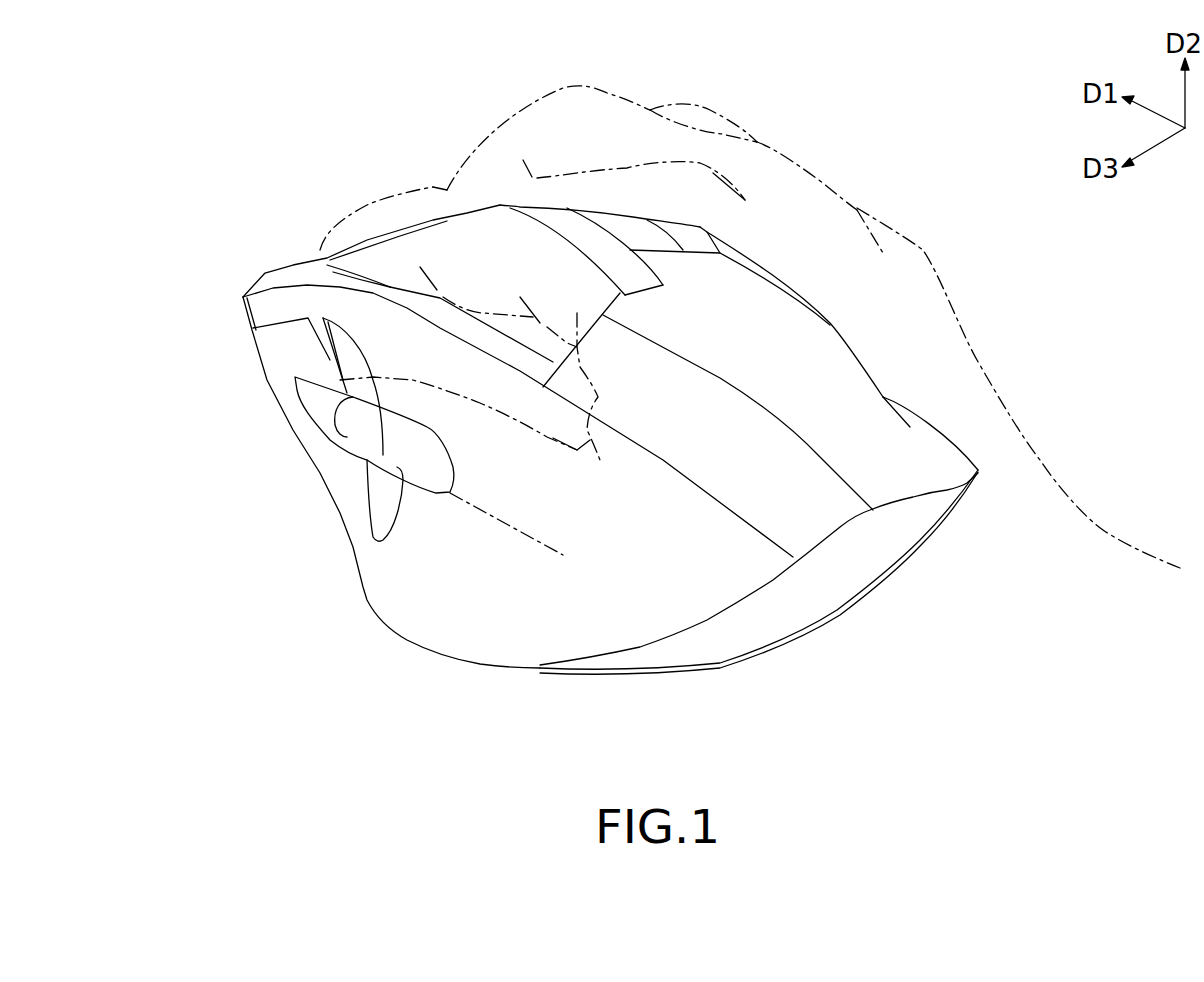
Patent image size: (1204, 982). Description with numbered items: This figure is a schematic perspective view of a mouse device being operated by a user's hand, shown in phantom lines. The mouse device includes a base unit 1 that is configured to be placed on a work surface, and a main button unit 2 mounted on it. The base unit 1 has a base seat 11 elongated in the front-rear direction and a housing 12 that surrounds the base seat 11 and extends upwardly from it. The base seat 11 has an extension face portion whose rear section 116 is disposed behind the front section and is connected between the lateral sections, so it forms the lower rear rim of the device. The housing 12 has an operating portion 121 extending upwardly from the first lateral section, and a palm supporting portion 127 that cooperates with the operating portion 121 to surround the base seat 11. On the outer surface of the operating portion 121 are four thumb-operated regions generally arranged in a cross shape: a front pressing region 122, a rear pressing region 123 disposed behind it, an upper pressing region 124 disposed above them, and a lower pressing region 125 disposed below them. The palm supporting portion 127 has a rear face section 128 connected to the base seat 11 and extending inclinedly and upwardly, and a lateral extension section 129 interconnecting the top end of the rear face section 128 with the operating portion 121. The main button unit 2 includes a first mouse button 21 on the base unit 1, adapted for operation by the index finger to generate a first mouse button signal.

The base unit 1 is at (363, 595).
The first mouse button 21 is at (606, 270).
The main button unit 2 is at (396, 233).
The upper pressing region 124 is at (323, 318).
The front pressing region 122 is at (317, 402).
The lower pressing region 125 is at (387, 507).
The rear pressing region 123 is at (426, 455).
The operating portion 121 is at (558, 518).
The housing 12 is at (637, 557).
The rear section 116 is at (759, 611).
The base seat 11 is at (783, 637).
The rear face section 128 is at (860, 560).
The lateral extension section 129 is at (966, 496).
The palm supporting portion 127 is at (917, 468).